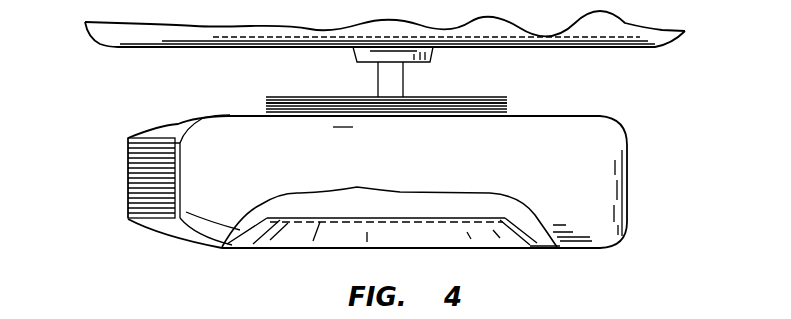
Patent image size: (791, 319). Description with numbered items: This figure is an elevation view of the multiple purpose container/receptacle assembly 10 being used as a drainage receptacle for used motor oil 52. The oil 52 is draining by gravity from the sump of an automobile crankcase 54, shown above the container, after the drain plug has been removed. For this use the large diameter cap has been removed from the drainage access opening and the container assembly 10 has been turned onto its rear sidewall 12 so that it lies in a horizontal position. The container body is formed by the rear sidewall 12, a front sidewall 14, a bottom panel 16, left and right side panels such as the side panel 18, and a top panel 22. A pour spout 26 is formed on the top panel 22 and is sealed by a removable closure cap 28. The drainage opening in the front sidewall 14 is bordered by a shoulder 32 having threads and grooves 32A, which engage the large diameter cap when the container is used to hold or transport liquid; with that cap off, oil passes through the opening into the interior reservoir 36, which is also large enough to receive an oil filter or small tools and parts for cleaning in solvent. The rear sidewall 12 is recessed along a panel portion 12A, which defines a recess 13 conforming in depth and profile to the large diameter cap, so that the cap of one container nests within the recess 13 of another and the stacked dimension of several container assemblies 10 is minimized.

The multiple purpose container/receptacle assembly 10 is at (429, 166).
The rear sidewall 12 is at (563, 249).
The recessed panel portion 12A is at (483, 222).
The recess 13 is at (308, 238).
The front sidewall 14 is at (583, 115).
The bottom panel 16 is at (630, 200).
The left side panel 18 is at (585, 211).
The top panel 22 is at (152, 228).
The pour spout 26 is at (180, 178).
The removable closure cap 28 is at (126, 192).
The shoulder 32 is at (505, 97).
The threads and grooves 32A is at (266, 105).
The reservoir 36 is at (371, 210).
The used motor oil 52 is at (400, 80).
The automobile crankcase 54 is at (685, 32).